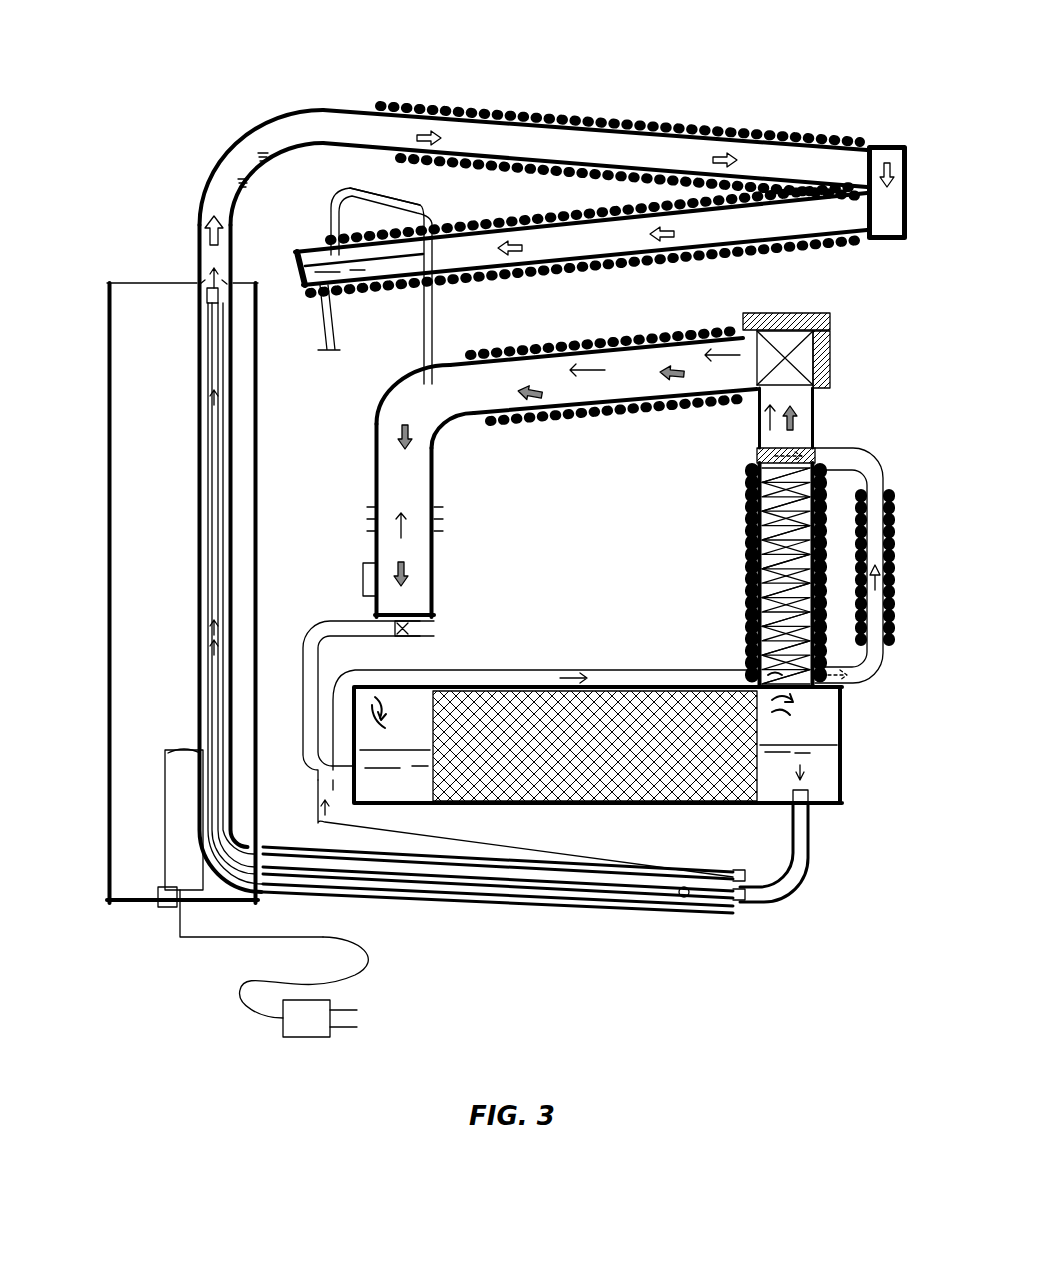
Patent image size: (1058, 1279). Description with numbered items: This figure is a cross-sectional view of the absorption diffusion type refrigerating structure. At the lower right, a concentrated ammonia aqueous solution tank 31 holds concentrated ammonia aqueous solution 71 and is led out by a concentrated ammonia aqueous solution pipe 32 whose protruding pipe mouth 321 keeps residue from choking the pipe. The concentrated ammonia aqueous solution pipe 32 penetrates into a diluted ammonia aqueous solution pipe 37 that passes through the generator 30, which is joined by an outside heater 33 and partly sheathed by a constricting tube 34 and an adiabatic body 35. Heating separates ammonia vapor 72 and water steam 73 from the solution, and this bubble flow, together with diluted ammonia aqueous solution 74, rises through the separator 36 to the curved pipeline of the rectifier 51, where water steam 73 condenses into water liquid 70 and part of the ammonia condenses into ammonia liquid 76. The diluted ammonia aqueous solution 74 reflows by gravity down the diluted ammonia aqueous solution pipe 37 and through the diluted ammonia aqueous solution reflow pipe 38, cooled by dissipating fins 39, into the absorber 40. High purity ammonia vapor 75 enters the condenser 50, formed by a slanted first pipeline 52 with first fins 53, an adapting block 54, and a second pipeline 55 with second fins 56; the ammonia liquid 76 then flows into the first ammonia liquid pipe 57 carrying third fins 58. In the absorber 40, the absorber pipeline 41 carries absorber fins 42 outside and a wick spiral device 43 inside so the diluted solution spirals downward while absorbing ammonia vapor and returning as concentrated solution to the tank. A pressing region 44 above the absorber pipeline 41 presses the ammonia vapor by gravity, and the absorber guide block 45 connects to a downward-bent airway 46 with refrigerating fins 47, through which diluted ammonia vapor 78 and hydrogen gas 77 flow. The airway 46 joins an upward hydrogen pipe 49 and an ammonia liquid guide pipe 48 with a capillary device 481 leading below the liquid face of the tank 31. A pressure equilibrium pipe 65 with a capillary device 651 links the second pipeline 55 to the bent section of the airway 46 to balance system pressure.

The generator 30 is at (115, 925).
The concentrated ammonia aqueous solution tank 31 is at (842, 788).
The concentrated ammonia aqueous solution pipe 32 is at (370, 880).
The pipe mouth 321 is at (812, 800).
The heater 33 is at (175, 892).
The constricting tube 34 is at (258, 378).
The adiabatic body 35 is at (118, 352).
The separator 36 is at (205, 312).
The diluted ammonia aqueous solution pipe 37 is at (652, 910).
The diluted ammonia aqueous solution reflow pipe 38 is at (868, 470).
The dissipating fins 39 is at (885, 648).
The absorber 40 is at (700, 526).
The absorber pipeline 41 is at (757, 563).
The absorber fins 42 is at (757, 633).
The wick spiral device 43 is at (757, 596).
The pressing region 44 is at (815, 400).
The absorber guide block 45 is at (832, 328).
The airway 46 is at (587, 405).
The refrigerating fins 47 is at (640, 400).
The ammonia liquid guide pipe 48 is at (305, 645).
The capillary device 481 is at (363, 590).
The hydrogen pipe 49 is at (385, 610).
The condenser 50 is at (562, 92).
The rectifier 51 is at (200, 190).
The first pipeline of condenser 52 is at (870, 145).
The first fins 53 is at (660, 118).
The adapting block of condenser 54 is at (890, 148).
The second pipeline of condenser 55 is at (822, 245).
The second fins 56 is at (742, 248).
The first ammonia liquid pipe 57 is at (328, 330).
The third fins 58 is at (318, 348).
The pressure equilibrium pipe 65 is at (428, 205).
The capillary device 651 is at (385, 190).
The water liquid 70 is at (258, 156).
The concentrated ammonia aqueous solution 71 is at (815, 485).
The ammonia vapor 72 is at (220, 630).
The water steam 73 is at (245, 187).
The diluted ammonia aqueous solution 74 is at (222, 405).
The high purity ammonia vapor 75 is at (425, 108).
The ammonia liquid 76 is at (330, 245).
The hydrogen gas 77 is at (525, 405).
The diluted ammonia vapor 78 is at (580, 375).